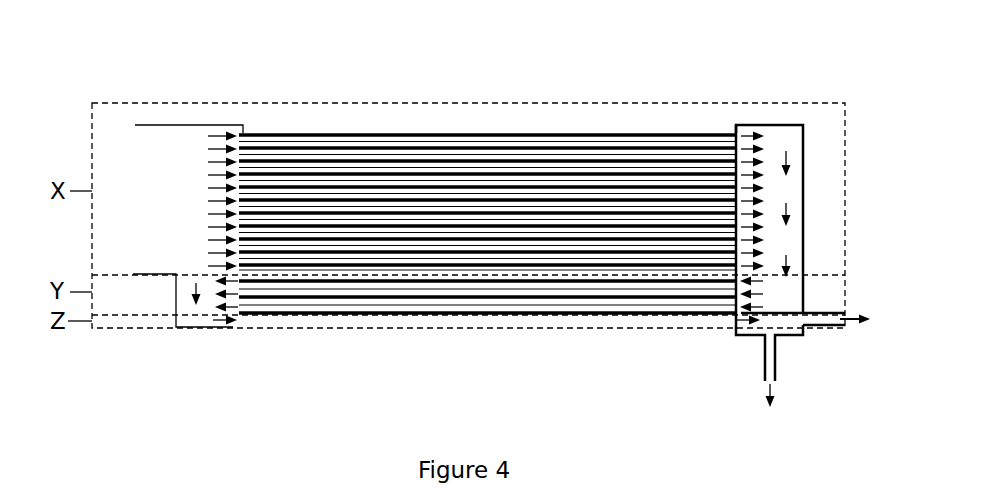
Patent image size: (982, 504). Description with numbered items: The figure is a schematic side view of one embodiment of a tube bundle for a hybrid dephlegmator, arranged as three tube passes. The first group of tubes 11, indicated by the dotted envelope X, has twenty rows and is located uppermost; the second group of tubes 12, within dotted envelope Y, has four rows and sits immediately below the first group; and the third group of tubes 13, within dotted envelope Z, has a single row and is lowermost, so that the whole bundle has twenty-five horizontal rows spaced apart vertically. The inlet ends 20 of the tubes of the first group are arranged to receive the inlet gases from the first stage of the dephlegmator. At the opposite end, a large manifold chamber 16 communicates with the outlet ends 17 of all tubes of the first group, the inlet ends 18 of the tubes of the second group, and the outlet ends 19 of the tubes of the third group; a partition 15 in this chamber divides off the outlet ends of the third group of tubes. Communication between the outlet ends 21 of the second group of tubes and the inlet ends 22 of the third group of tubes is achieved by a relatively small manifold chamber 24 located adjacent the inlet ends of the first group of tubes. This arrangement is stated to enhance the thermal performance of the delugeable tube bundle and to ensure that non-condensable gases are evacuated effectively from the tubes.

The first group of tubes 11 is at (433, 257).
The second group of tubes 12 is at (425, 273).
The third group of tubes 13 is at (580, 308).
The partition 15 is at (775, 304).
The large manifold chamber 16 is at (765, 228).
The outlet ends of the tubes of the first group 17 is at (745, 250).
The inlet ends of the tubes of the second group 18 is at (738, 274).
The outlet ends of the tubes of the third group 19 is at (728, 317).
The inlet ends of the tubes of the first group 20 is at (230, 240).
The outlet ends of the second group of tubes 21 is at (233, 274).
The inlet ends of the third group of tubes 22 is at (231, 311).
The small manifold chamber 24 is at (188, 300).